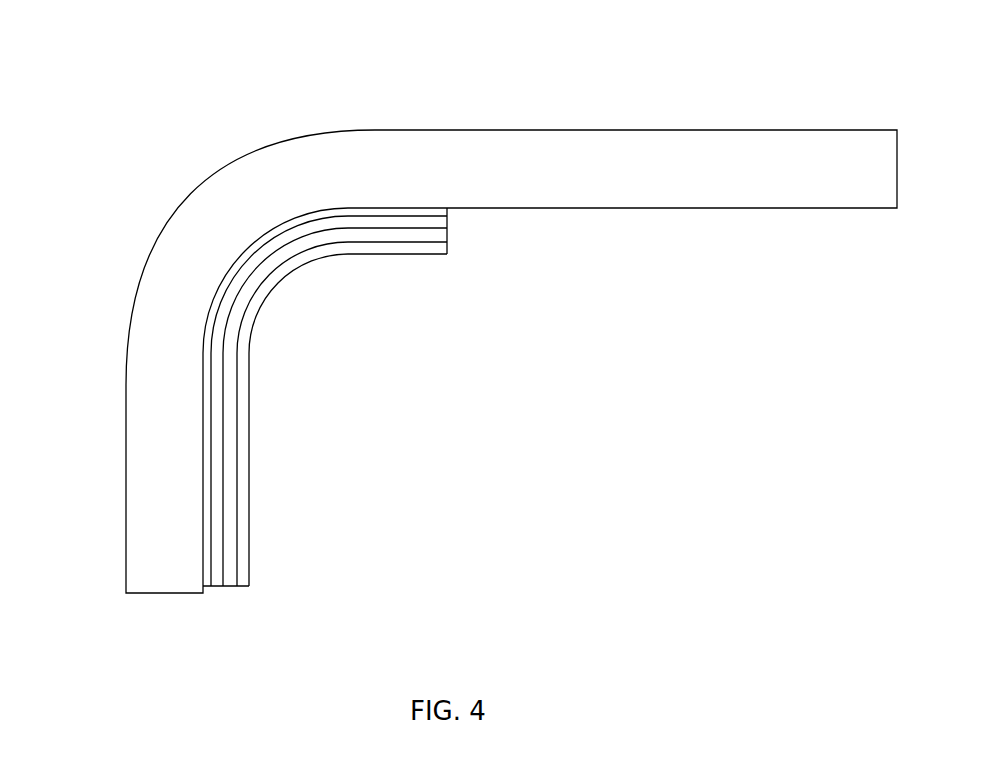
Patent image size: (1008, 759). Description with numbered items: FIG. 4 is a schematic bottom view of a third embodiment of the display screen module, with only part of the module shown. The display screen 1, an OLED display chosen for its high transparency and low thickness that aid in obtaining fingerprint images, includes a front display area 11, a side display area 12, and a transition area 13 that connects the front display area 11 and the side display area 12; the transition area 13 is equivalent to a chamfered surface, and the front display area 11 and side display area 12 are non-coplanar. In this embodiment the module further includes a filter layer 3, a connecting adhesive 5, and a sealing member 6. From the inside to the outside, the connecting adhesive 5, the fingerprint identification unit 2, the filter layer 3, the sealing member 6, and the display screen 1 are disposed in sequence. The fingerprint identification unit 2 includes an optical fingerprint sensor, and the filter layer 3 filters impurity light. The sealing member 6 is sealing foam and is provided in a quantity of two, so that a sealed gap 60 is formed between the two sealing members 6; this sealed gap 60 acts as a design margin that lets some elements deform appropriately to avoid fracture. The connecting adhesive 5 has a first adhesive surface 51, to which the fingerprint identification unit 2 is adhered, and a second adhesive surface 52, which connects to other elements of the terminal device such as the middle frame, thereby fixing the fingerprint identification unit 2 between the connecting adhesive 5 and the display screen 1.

The display screen 1 is at (777, 118).
The front display area 11 is at (645, 128).
The side display area 12 is at (126, 455).
The transition area 13 is at (306, 133).
The fingerprint identification unit 2 is at (230, 347).
The filter layer 3 is at (217, 398).
The connecting adhesive 5 is at (263, 302).
The first adhesive surface 51 is at (430, 235).
The second adhesive surface 52 is at (430, 235).
The sealing member 6 is at (395, 208).
The sealed gap 60 is at (285, 228).